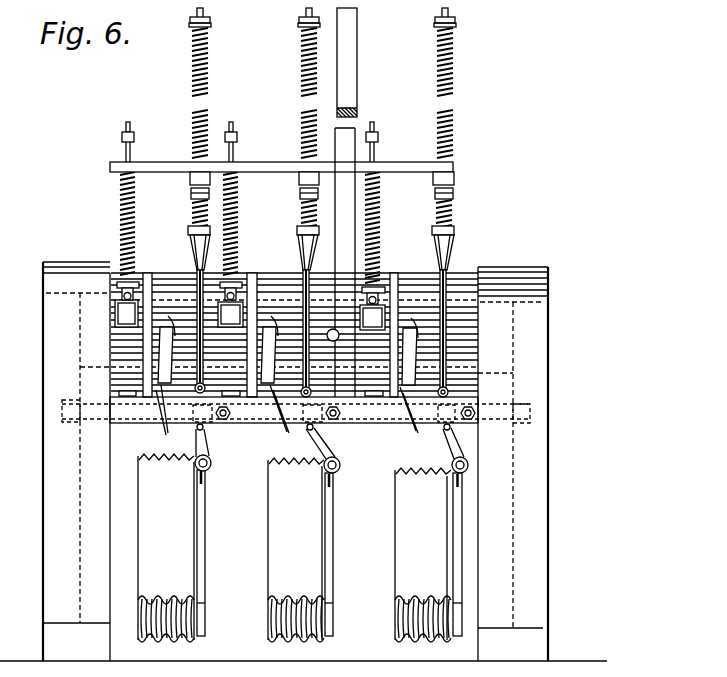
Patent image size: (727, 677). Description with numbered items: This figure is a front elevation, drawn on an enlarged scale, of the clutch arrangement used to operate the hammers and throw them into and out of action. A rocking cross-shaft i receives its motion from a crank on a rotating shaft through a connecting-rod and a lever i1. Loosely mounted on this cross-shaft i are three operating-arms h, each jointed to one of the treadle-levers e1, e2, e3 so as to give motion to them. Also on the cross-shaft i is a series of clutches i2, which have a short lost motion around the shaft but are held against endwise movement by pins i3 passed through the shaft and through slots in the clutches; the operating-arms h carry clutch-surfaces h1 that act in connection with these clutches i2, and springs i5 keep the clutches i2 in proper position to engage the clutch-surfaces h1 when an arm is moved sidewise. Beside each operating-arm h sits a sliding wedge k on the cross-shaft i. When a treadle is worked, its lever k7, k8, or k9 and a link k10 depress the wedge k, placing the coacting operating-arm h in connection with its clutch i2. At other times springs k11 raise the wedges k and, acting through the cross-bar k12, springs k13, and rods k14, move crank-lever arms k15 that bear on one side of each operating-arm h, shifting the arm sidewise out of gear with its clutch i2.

The spring k11 is at (192, 71).
The lever i1 is at (350, 42).
The spring i5 is at (120, 189).
The spring k13 is at (190, 211).
The cross-bar k12 is at (295, 229).
The rod k14 is at (302, 250).
The sliding wedge k is at (190, 242).
The clutch-surface h1 is at (195, 268).
The operating-arm h is at (294, 355).
The clutch i2 is at (250, 348).
The cross-shaft i is at (500, 339).
The pin i3 is at (296, 419).
The crank-lever arm k15 is at (167, 431).
The link k10 is at (214, 441).
The lever k7 is at (206, 617).
The lever k8 is at (334, 617).
The lever k9 is at (462, 618).
The treadle-lever e1 is at (166, 548).
The treadle-lever e2 is at (296, 550).
The treadle-lever e3 is at (423, 555).